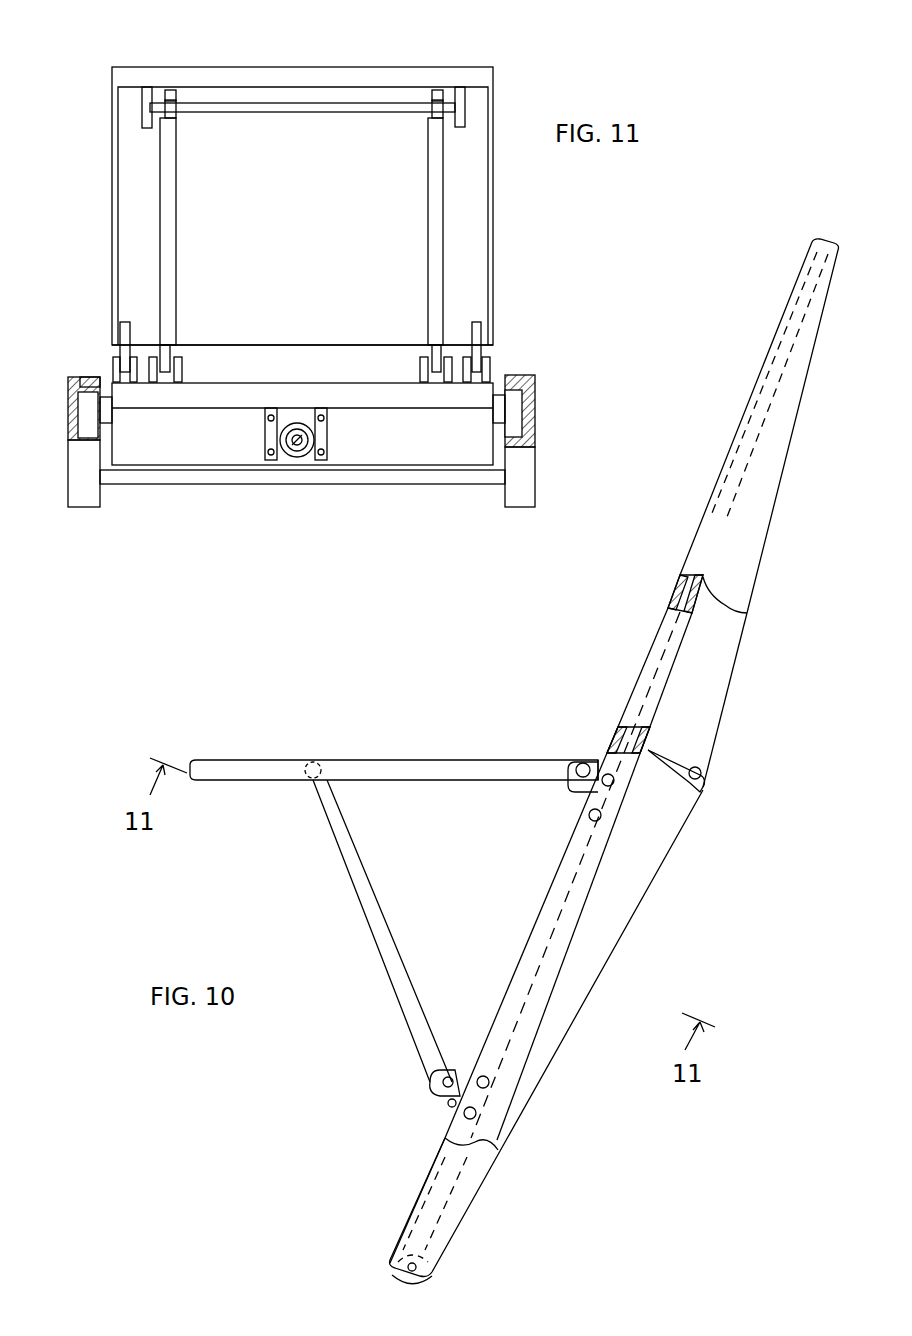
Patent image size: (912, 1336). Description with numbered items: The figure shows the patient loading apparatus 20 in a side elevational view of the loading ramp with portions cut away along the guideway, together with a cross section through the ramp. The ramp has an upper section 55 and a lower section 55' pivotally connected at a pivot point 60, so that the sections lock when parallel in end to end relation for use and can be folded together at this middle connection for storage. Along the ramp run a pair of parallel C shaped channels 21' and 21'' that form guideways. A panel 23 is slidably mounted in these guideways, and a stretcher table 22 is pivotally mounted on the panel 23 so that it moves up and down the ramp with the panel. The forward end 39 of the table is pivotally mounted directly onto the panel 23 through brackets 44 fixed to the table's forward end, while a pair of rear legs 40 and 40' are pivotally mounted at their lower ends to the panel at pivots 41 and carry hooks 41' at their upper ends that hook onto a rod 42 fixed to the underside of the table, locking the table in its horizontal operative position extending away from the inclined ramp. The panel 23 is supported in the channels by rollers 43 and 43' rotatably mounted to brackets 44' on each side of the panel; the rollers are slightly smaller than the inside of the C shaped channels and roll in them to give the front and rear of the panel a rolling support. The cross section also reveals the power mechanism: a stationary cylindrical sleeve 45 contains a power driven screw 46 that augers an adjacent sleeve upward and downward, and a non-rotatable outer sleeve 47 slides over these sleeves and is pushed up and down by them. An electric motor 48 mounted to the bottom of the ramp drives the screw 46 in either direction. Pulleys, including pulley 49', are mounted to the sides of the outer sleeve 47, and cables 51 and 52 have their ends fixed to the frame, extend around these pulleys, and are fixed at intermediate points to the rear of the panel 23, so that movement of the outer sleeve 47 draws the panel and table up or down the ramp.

In FIG. 11, the patient loading apparatus 20 is at (495, 298).
In FIG. 11, the C shaped channel 21' is at (59, 408).
In FIG. 11, the C shaped channel 21'' is at (553, 411).
In FIG. 10, the C shaped channel 21'' is at (704, 664).
In FIG. 11, the stretcher table 22 is at (495, 238).
In FIG. 11, the panel 23 is at (308, 382).
In FIG. 10, the panel 23 is at (497, 950).
In FIG. 11, the forward end of the table 39 is at (112, 365).
In FIG. 11, the rear leg 40 is at (199, 222).
In FIG. 10, the rear leg 40 is at (370, 807).
In FIG. 11, the rear leg 40' is at (409, 222).
In FIG. 10, the rear leg 40' is at (382, 931).
In FIG. 11, the pivot 41 is at (300, 346).
In FIG. 11, the hook 41' is at (319, 67).
In FIG. 11, the rod 42 is at (275, 112).
In FIG. 11, the roller 43 is at (277, 468).
In FIG. 10, the roller 43 is at (474, 1200).
In FIG. 11, the roller 43' is at (342, 371).
In FIG. 10, the roller 43' is at (619, 917).
In FIG. 11, the bracket 44 is at (132, 422).
In FIG. 11, the bracket 44' is at (475, 421).
In FIG. 10, the bracket 44' is at (495, 950).
In FIG. 11, the stationary cylindrical sleeve 45 is at (310, 446).
In FIG. 11, the screw 46 is at (306, 440).
In FIG. 11, the outer sleeve 47 is at (265, 452).
In FIG. 11, the electric motor 48 is at (265, 435).
In FIG. 11, the pulley 49' is at (362, 427).
In FIG. 11, the cable 51 is at (268, 412).
In FIG. 11, the cable 52 is at (325, 412).
In FIG. 10, the upper section 55 is at (759, 513).
In FIG. 10, the lower section 55' is at (563, 1037).
In FIG. 10, the pivot point 60 is at (707, 774).